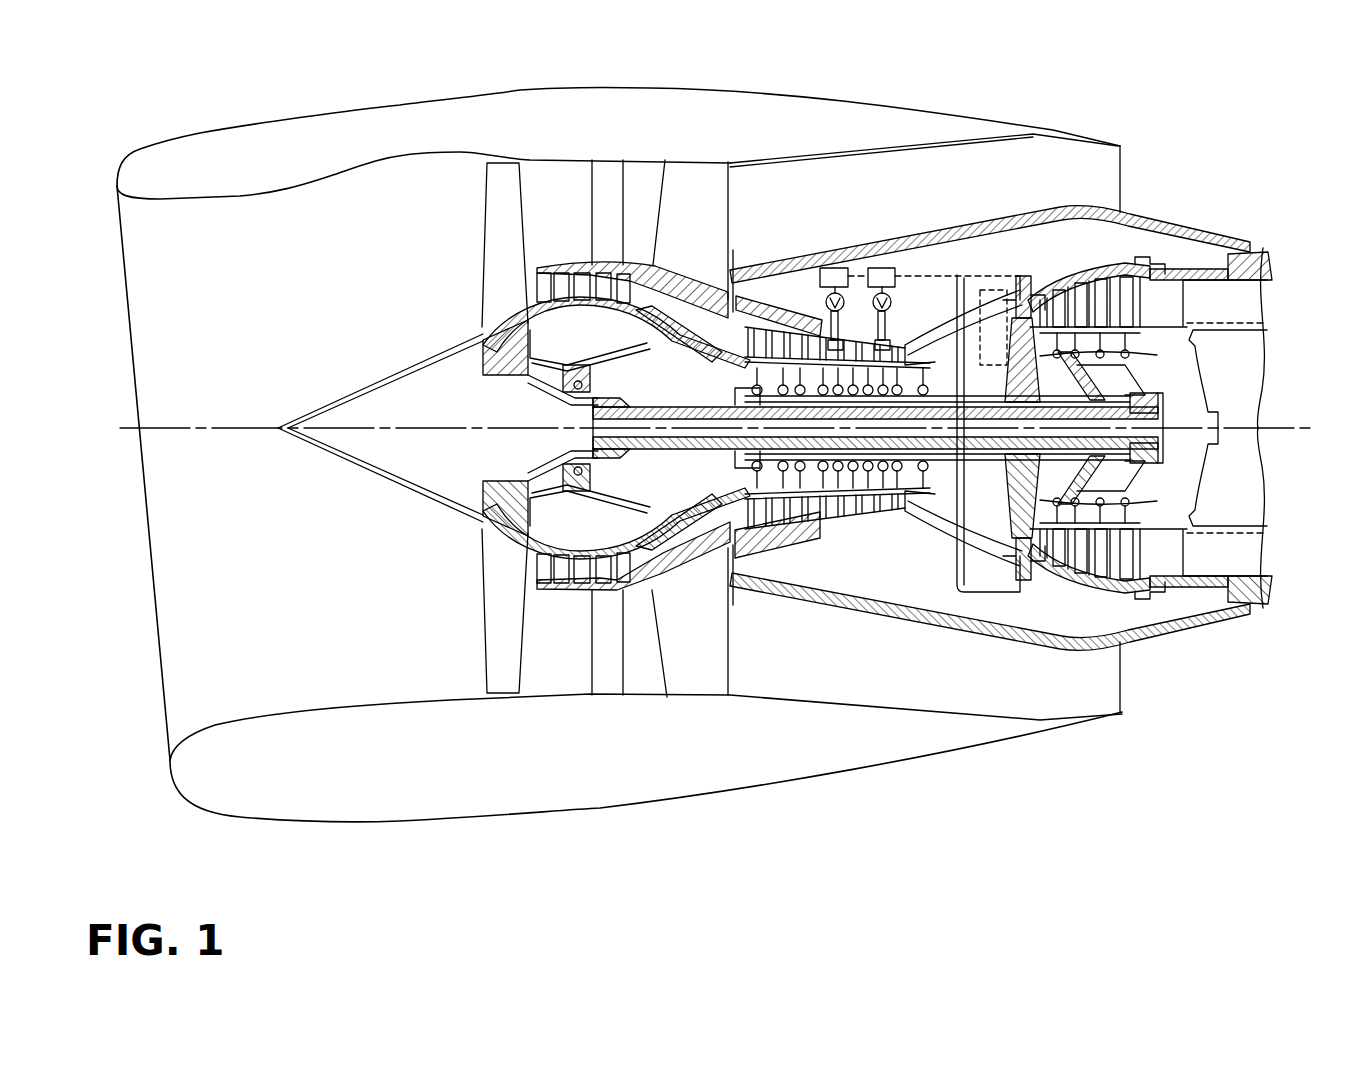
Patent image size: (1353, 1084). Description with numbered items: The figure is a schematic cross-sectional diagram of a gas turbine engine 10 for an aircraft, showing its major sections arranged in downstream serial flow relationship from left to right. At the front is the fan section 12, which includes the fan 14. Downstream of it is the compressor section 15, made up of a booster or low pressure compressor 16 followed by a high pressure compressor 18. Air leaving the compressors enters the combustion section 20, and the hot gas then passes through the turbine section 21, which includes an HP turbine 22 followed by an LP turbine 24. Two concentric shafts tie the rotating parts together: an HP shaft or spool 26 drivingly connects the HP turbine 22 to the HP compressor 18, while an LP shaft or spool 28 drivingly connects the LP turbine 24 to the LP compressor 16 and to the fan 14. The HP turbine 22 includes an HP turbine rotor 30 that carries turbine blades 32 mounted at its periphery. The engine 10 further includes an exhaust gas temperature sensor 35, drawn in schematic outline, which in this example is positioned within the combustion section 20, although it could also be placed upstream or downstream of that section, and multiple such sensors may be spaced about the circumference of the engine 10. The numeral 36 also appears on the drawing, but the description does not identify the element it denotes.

The gas turbine engine 10 is at (462, 580).
The fan section 12 is at (517, 144).
The fan 14 is at (497, 232).
The compressor section 15 is at (701, 197).
The low pressure (LP) compressor 16 is at (598, 268).
The high pressure (HP) compressor 18 is at (805, 340).
The combustion section 20 is at (973, 556).
The turbine section 21 is at (1068, 207).
The HP turbine 22 is at (1032, 560).
The LP turbine 24 is at (1082, 274).
The HP shaft or spool 26 is at (955, 471).
The LP shaft or spool 28 is at (948, 410).
The HP turbine rotor 30 is at (1100, 360).
The turbine blades 32 is at (1105, 312).
The exhaust gas temperature (EGT) sensor 35 is at (975, 295).
The turbine vane 36 is at (1030, 300).